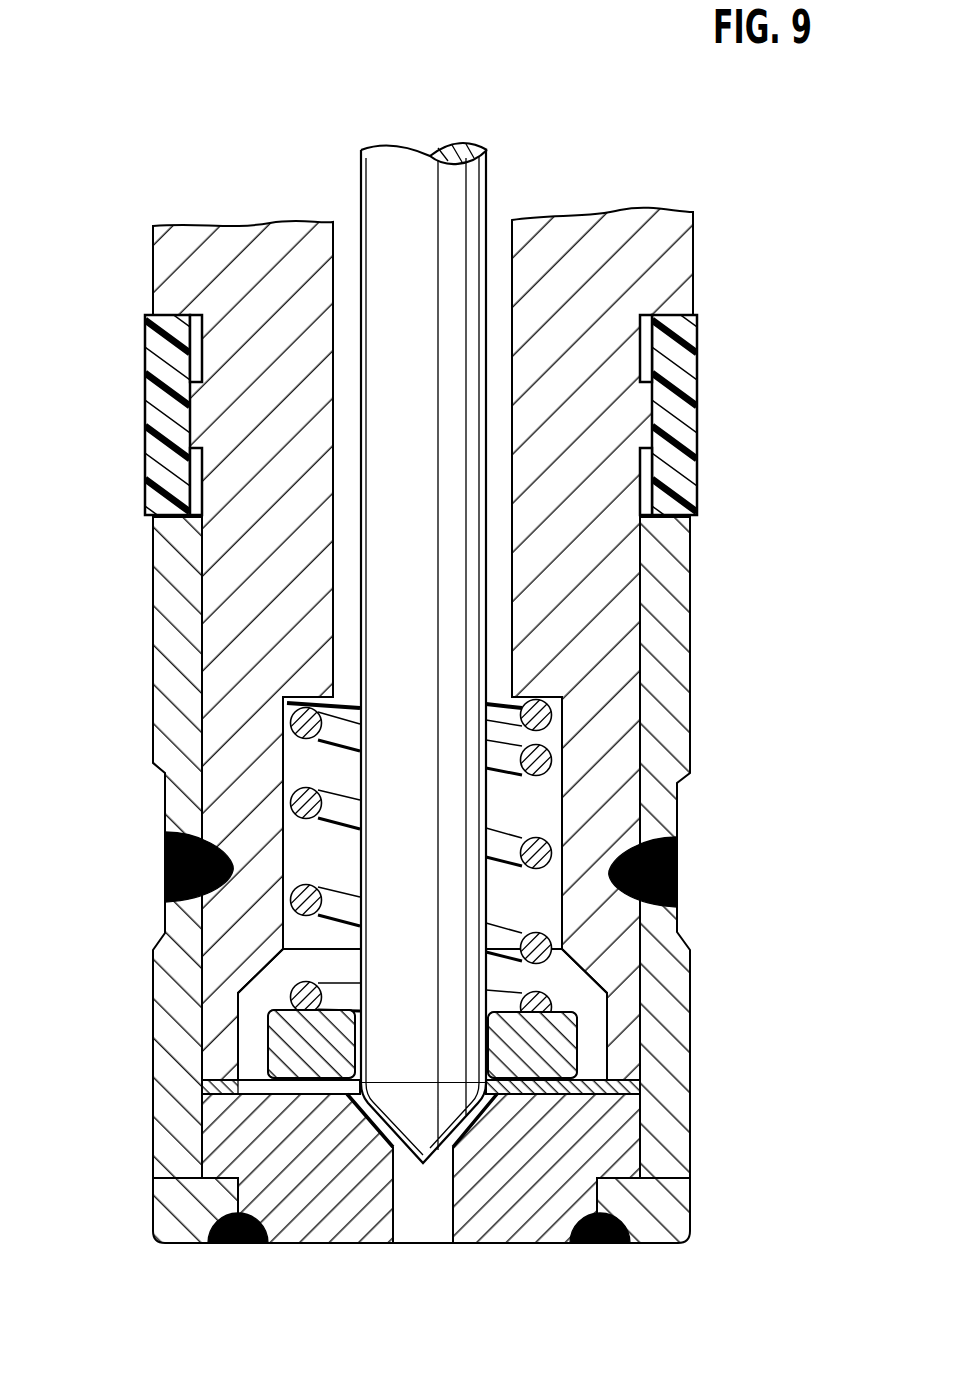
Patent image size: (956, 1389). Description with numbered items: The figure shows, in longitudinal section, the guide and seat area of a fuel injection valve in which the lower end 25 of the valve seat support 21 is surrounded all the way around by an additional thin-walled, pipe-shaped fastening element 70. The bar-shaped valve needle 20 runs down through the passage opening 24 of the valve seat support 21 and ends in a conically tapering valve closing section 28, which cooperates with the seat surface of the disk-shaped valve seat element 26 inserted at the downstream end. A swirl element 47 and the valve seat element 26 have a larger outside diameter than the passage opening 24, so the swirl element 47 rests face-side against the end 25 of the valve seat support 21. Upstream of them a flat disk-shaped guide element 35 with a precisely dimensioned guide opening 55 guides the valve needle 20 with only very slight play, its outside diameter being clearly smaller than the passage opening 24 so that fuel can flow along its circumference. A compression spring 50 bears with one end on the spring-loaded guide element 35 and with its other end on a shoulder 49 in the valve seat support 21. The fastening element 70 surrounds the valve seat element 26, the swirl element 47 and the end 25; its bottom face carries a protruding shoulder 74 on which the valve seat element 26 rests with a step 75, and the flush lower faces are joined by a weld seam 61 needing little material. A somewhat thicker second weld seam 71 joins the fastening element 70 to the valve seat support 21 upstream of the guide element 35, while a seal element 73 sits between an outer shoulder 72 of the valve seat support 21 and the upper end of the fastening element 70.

The valve needle 20 is at (400, 166).
The valve seat support 21 is at (617, 586).
The passage opening 24 is at (290, 843).
The lower end of valve seat support 25 is at (612, 965).
The valve seat element 26 is at (540, 1215).
The valve closing section 28 is at (370, 1120).
The guide element 35 is at (295, 1028).
The swirl element 47 is at (618, 1070).
The shoulder 49 is at (512, 697).
The compression spring 50 is at (292, 796).
The guide opening 55 is at (360, 1048).
The weld seam 61 is at (240, 1247).
The fastening element 70 is at (177, 1034).
The second weld seam 71 is at (678, 861).
The outer shoulder 72 is at (690, 318).
The seal element 73 is at (158, 410).
The protruding shoulder 74 is at (222, 1196).
The step 75 is at (618, 1187).